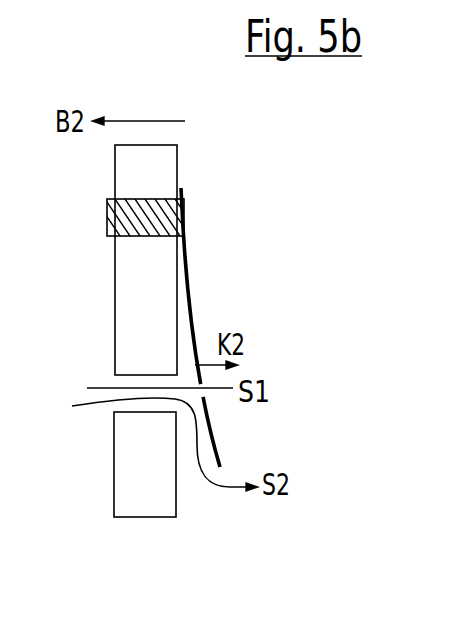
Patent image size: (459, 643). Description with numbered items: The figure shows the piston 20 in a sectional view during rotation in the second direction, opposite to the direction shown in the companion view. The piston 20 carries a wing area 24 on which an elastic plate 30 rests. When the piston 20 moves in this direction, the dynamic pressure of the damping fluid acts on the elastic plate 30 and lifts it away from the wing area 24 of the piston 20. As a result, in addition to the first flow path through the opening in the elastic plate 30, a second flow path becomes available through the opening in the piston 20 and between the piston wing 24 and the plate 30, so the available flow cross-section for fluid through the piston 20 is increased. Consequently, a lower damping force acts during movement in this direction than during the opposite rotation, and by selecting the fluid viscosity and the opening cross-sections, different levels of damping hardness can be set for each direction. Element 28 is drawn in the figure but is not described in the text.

The piston 20 is at (92, 190).
The wing area 24 is at (118, 481).
The adhesive / coating layer 28 is at (106, 218).
The elastic plate 30 is at (190, 293).